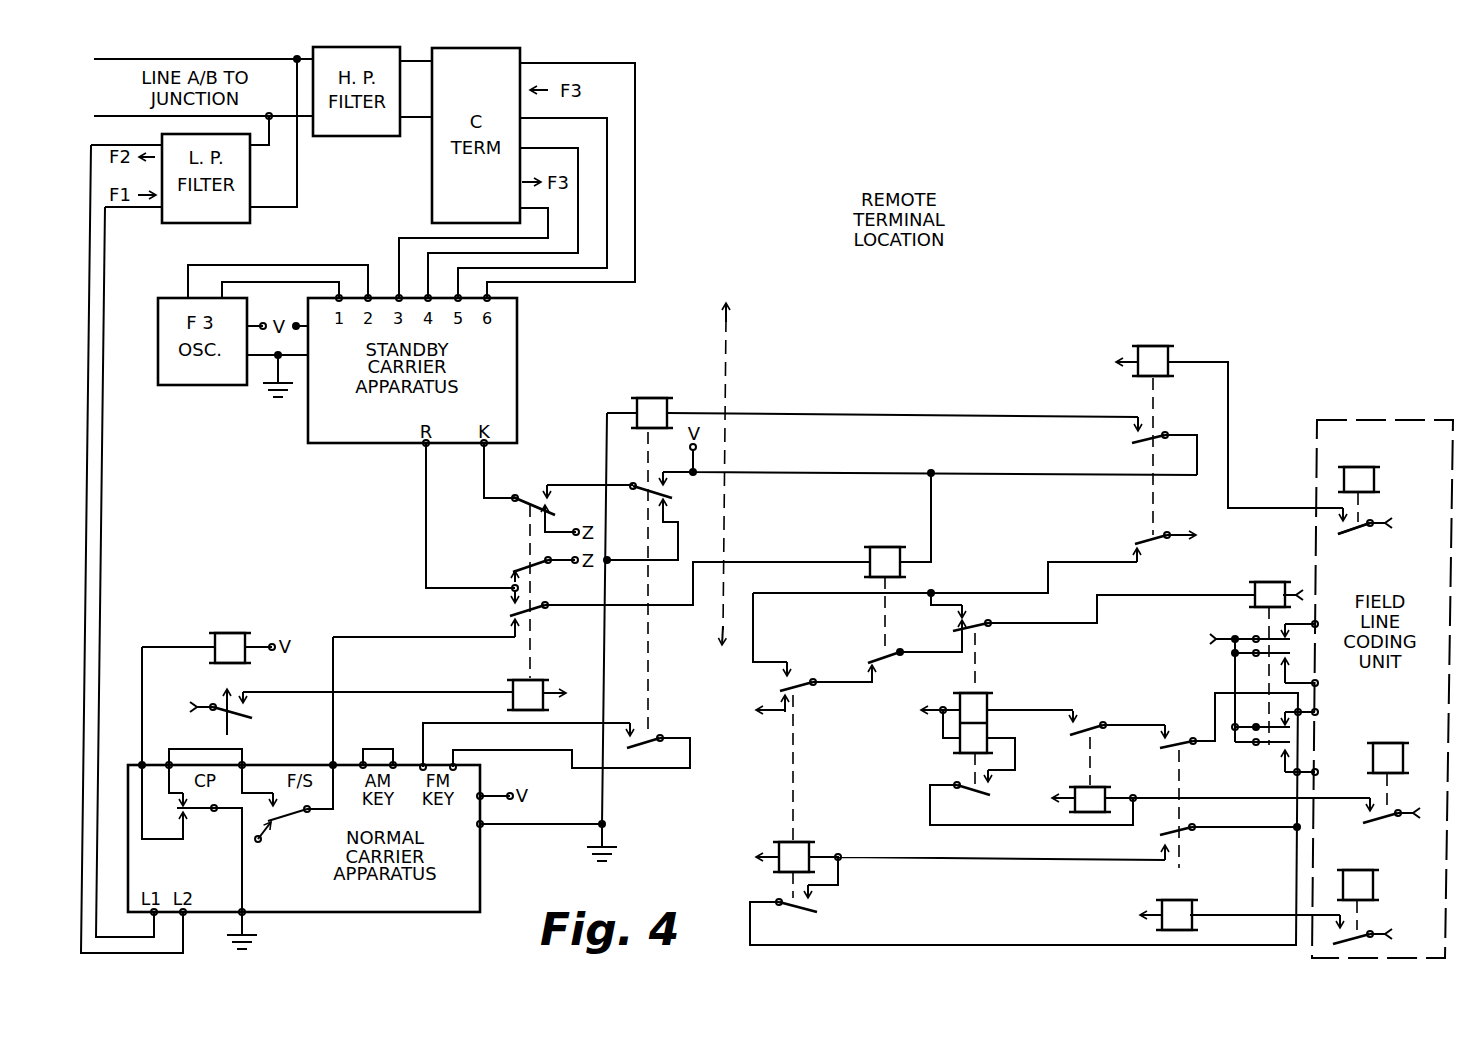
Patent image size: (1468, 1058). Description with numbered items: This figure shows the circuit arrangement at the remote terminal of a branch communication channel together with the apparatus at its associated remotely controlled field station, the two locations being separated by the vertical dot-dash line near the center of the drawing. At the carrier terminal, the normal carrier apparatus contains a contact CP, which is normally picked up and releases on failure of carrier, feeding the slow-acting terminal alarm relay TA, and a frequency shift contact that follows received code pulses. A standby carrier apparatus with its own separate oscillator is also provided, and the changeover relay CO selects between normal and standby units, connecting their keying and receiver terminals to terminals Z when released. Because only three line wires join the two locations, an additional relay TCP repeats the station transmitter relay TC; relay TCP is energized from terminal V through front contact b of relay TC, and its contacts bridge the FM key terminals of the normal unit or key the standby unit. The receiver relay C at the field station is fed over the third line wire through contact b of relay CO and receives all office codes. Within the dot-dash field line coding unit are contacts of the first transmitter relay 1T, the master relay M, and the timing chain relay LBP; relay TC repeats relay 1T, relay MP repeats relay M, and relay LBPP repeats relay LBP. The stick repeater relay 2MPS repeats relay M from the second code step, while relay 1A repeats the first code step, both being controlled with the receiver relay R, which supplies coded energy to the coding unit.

The changeover relay CO is at (556, 576).
The interface relay repeating the transmitter relay TCP is at (810, 617).
The terminal alarm relay TA is at (208, 724).
The carrier operation detecting contact CP is at (221, 830).
The station carrier receiver relay C is at (887, 576).
The stick repeater relay 2MPS is at (1004, 686).
The first step repeater relay 1A is at (1016, 769).
The master repeater relay MP is at (1201, 750).
The timing chain repeater relay LBPP is at (1230, 819).
The receiver relay R is at (1254, 666).
The station carrier transmitter relay TC is at (1220, 432).
The first transmitter relay 1T is at (1372, 498).
The master relay M is at (1399, 779).
The timing chain relay LBP is at (1370, 903).